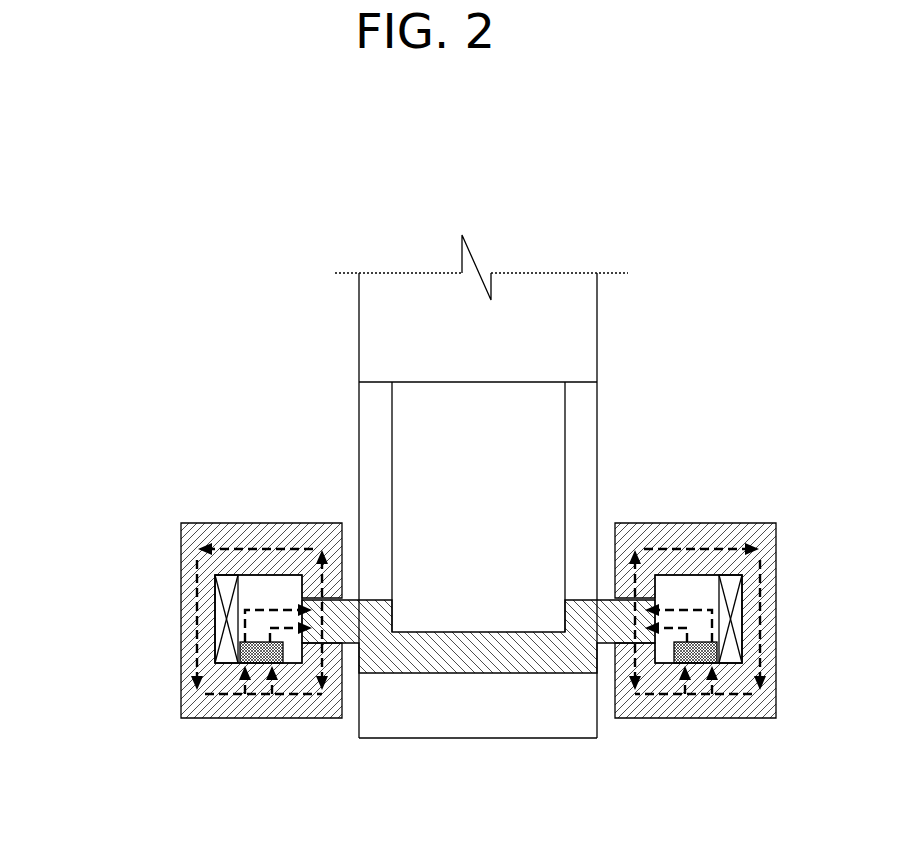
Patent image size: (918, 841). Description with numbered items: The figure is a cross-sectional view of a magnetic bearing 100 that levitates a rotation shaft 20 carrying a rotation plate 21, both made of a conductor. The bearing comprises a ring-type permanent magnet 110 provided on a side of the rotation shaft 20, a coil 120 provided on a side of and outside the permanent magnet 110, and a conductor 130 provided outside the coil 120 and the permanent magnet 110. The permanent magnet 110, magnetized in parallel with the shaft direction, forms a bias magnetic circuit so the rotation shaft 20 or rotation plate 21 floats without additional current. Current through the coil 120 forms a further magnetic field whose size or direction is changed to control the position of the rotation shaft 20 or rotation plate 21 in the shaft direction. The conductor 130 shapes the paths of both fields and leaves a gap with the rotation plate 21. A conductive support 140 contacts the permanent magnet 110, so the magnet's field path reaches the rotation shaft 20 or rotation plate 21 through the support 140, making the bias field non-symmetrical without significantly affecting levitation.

The rotation shaft 20 is at (550, 432).
The rotation plate 21 is at (480, 665).
The magnetic bearing 100 is at (208, 502).
The permanent magnet 110 is at (240, 642).
The coil 120 is at (218, 613).
The conductor 130 is at (192, 700).
The support 140 is at (262, 601).